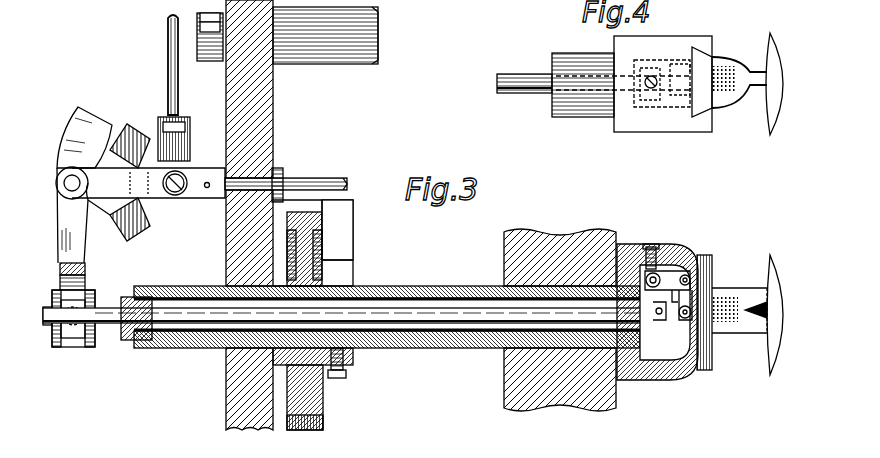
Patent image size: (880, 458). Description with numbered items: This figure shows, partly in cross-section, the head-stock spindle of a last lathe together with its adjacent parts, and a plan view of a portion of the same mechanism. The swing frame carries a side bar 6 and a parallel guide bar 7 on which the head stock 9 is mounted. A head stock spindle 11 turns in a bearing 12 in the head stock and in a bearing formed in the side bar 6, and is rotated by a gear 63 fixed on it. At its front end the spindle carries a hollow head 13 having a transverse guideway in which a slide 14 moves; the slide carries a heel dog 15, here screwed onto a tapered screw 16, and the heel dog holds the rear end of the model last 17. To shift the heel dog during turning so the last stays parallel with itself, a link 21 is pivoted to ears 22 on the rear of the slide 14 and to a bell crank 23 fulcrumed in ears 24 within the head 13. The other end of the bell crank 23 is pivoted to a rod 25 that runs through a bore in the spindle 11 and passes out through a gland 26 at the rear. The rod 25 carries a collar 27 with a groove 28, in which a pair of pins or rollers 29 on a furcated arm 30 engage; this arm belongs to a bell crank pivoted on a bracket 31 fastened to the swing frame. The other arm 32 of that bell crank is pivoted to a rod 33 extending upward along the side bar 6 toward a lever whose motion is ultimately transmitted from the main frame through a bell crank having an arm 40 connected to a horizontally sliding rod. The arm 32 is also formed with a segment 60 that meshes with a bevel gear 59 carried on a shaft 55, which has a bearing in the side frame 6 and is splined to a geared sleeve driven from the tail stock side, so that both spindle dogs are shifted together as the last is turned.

In FIG. 3, the swing-frame side-bar 6 is at (266, 141).
In FIG. 3, the guide bar 7 is at (343, 65).
In FIG. 3, the head stock 9 is at (603, 410).
In FIG. 3, the head stock spindle 11 is at (412, 285).
In FIG. 4, the head stock spindle 11 is at (575, 112).
In FIG. 3, the bearing 12 is at (530, 348).
In FIG. 3, the hollow head 13 is at (703, 256).
In FIG. 4, the hollow head 13 is at (664, 42).
In FIG. 3, the slide 14 is at (710, 275).
In FIG. 4, the slide 14 is at (701, 57).
In FIG. 3, the heel dog 15 is at (743, 298).
In FIG. 4, the heel dog 15 is at (746, 100).
In FIG. 3, the tapered screw 16 is at (724, 322).
In FIG. 4, the tapered screw 16 is at (722, 94).
In FIG. 3, the model last 17 is at (779, 367).
In FIG. 4, the model last 17 is at (786, 130).
In FIG. 3, the link 21 is at (673, 302).
In FIG. 3, the ears 22 is at (684, 320).
In FIG. 3, the bell crank 23 is at (680, 272).
In FIG. 3, the ears 24 is at (645, 262).
In FIG. 3, the rod 25 is at (102, 308).
In FIG. 4, the rod 25 is at (514, 94).
In FIG. 3, the gland 26 is at (128, 348).
In FIG. 3, the collar 27 is at (92, 347).
In FIG. 3, the groove 28 is at (71, 347).
In FIG. 3, the pins or rollers 29 is at (82, 298).
In FIG. 3, the furcated arm 30 is at (62, 221).
In FIG. 3, the bracket 31 is at (95, 121).
In FIG. 3, the arm 32 is at (166, 198).
In FIG. 3, the rod 33 is at (178, 96).
In FIG. 3, the arm 40 is at (123, 450).
In FIG. 3, the shaft 55 is at (306, 180).
In FIG. 3, the bevel gear 59 is at (150, 222).
In FIG. 3, the segment 60 is at (125, 140).
In FIG. 3, the gear 63 is at (325, 413).